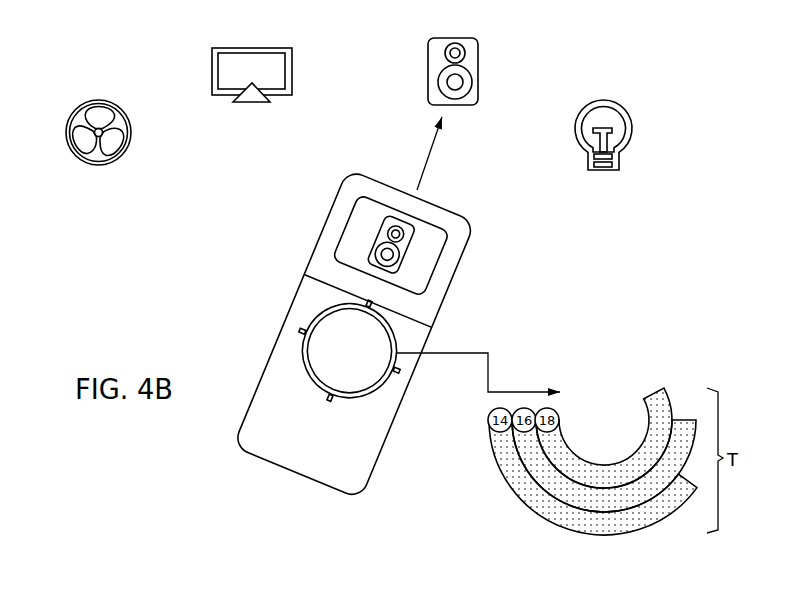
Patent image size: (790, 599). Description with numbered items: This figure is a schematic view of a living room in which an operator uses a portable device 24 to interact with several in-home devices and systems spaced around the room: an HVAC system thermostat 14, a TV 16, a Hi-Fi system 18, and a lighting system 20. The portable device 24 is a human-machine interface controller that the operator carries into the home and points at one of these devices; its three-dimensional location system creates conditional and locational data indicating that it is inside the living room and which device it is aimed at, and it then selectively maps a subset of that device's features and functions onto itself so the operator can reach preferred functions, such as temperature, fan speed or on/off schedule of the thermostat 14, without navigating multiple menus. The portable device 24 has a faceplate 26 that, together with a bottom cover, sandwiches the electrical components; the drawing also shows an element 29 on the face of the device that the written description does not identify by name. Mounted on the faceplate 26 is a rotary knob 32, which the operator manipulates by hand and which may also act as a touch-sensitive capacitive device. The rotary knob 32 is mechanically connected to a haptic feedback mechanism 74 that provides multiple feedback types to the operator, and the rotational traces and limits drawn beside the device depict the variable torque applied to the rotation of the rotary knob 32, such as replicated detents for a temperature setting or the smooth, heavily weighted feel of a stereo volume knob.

The HVAC system thermostat 14 is at (77, 102).
The TV 16 is at (233, 46).
The Hi-Fi system 18 is at (457, 36).
The lighting system 20 is at (622, 107).
The portable device 24 is at (250, 260).
The faceplate 26 is at (330, 248).
The display screen 29 is at (362, 222).
The rotary knob 32 is at (349, 353).
The haptic feedback mechanism 74 is at (372, 376).